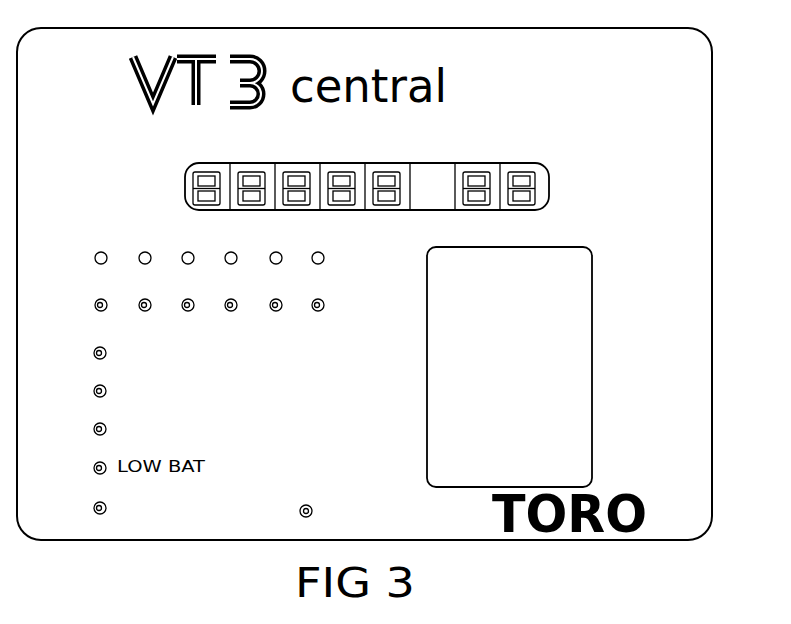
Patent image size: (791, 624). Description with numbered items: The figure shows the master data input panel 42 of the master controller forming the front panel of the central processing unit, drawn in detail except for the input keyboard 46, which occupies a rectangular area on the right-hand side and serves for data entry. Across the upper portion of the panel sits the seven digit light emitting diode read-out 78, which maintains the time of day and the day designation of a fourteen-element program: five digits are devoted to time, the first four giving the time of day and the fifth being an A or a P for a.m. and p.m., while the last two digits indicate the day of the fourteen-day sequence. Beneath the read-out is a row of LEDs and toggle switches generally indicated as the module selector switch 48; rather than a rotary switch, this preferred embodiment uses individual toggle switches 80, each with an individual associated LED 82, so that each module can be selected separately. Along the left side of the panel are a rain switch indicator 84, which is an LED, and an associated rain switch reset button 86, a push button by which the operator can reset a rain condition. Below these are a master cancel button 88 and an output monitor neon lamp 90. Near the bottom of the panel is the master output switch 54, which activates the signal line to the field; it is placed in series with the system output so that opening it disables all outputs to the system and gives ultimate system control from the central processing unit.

The master data input panel 42 is at (693, 192).
The input keyboard 46 is at (580, 413).
The module selector switch 48 is at (237, 254).
The master output switch 54 is at (311, 504).
The seven digit LED read-out 78 is at (540, 170).
The toggle switches 80 is at (325, 308).
The LEDs 82 is at (325, 261).
The rain switch indicator 84 is at (93, 354).
The rain switch reset button 86 is at (93, 392).
The master cancel button 88 is at (93, 430).
The output monitor neon lamp 90 is at (93, 509).